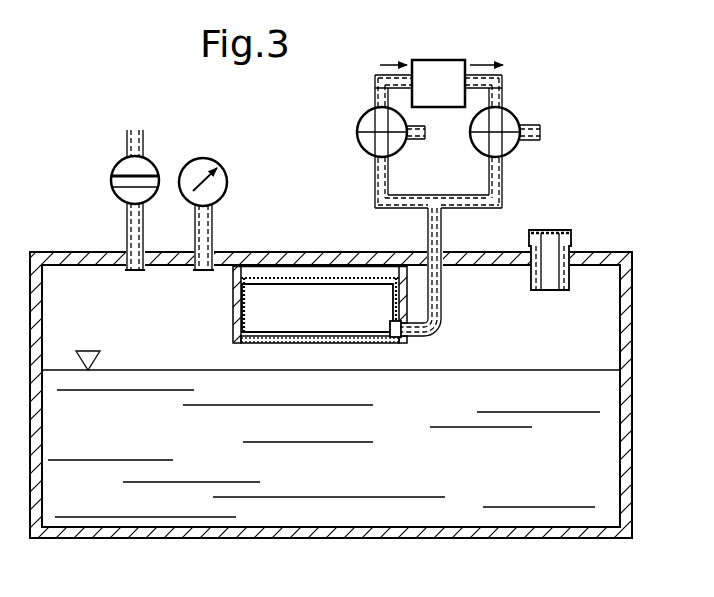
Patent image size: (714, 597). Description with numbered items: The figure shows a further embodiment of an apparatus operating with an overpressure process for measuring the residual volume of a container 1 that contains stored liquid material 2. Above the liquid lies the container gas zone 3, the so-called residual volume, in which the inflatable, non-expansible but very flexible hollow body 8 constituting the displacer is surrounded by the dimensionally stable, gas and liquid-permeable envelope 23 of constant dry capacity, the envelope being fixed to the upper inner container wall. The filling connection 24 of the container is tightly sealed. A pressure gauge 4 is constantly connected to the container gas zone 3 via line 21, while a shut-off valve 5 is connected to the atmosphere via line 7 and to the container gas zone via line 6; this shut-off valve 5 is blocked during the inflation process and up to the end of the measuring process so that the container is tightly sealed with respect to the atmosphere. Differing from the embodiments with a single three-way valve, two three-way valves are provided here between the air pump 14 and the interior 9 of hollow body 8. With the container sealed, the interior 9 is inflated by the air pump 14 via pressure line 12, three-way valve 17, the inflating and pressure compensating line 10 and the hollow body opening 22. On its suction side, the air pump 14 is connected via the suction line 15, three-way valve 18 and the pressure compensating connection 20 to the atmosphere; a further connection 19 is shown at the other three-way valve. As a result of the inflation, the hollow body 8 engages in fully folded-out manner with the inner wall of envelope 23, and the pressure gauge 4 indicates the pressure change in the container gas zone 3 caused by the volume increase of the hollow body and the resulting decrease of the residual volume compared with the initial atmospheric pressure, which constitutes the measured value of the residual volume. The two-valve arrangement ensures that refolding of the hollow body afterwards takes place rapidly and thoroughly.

The container 1 is at (626, 470).
The stored liquid material 2 is at (612, 413).
The container gas zone 3 is at (600, 305).
The pressure gauge 4 is at (205, 156).
The shut-off valve 5 is at (120, 163).
The line 6 is at (127, 223).
The line 7 is at (128, 143).
The hollow body 8 is at (254, 300).
The interior of hollow body 9 is at (338, 303).
The inflating and pressure compensating line 10 is at (443, 233).
The pressure line 12 is at (503, 88).
The air pump 14 is at (447, 60).
The suction line 15 is at (377, 90).
The three-way valve 17 is at (517, 108).
The three-way valve 18 is at (358, 132).
The outlet 19 is at (533, 140).
The pressure compensating connection 20 is at (423, 125).
The line 21 is at (195, 222).
The hollow body opening 22 is at (388, 323).
The envelope 23 is at (283, 278).
The filling connection 24 is at (565, 230).